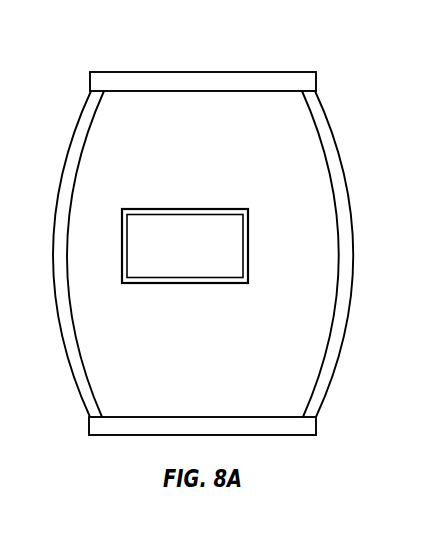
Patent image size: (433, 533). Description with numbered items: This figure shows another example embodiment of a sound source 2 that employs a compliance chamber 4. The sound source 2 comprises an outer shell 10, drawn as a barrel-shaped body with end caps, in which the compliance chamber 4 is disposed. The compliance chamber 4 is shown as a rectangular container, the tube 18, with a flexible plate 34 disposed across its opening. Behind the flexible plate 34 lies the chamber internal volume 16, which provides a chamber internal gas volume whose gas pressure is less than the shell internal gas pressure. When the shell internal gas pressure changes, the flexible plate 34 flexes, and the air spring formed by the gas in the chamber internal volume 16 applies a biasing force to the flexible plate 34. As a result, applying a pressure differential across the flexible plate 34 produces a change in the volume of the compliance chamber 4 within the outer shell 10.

The sound source 2 is at (80, 42).
The outer shell 10 is at (330, 127).
The chamber internal volume 16 is at (153, 247).
The tube 18 is at (248, 247).
The flexible plate 34 is at (183, 208).
The compliance chamber 4 is at (228, 303).